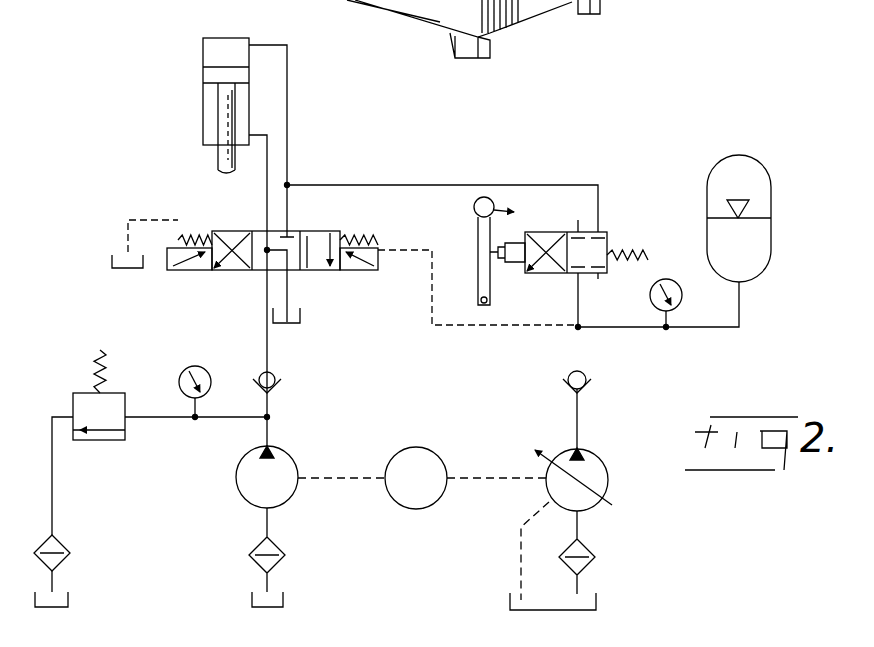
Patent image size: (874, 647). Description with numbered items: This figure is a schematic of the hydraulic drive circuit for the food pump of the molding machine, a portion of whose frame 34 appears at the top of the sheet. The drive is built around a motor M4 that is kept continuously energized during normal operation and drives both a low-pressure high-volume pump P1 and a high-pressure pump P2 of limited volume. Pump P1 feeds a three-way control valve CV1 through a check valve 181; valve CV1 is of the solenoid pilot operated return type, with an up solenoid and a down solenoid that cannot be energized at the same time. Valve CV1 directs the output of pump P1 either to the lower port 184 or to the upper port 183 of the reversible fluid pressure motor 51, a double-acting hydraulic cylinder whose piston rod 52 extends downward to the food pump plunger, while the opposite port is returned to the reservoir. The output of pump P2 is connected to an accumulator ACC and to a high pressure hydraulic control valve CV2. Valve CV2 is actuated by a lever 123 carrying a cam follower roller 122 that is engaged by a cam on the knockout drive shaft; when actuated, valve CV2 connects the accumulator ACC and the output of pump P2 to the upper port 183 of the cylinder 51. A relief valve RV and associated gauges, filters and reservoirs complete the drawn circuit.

The machine base (fragment of another figure) 34 is at (405, 2).
The reversible fluid pressure motor 51 is at (203, 77).
The piston rod 52 is at (218, 157).
The upper port 183 is at (252, 44).
The lower port 184 is at (252, 134).
The check valve 181 is at (278, 374).
The cam follower roller 122 is at (472, 205).
The lever 123 is at (490, 292).
The three-way control valve CV1 is at (228, 231).
The high pressure hydraulic control valve CV2 is at (607, 234).
The accumulator ACC is at (718, 165).
The low-pressure high-volume pump P1 is at (267, 526).
The high-pressure pump P2 is at (561, 490).
The motor M4 is at (422, 478).
The relief valve RV is at (152, 478).